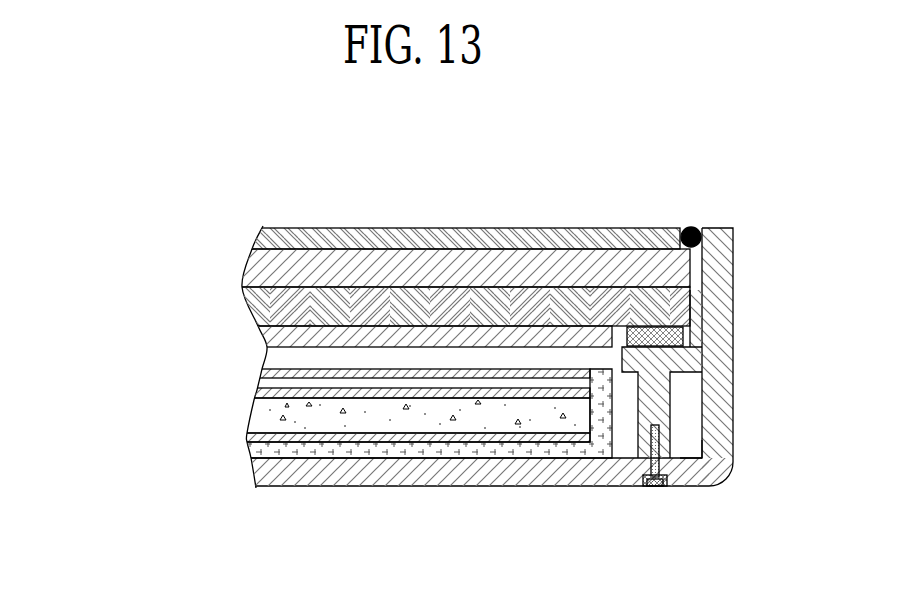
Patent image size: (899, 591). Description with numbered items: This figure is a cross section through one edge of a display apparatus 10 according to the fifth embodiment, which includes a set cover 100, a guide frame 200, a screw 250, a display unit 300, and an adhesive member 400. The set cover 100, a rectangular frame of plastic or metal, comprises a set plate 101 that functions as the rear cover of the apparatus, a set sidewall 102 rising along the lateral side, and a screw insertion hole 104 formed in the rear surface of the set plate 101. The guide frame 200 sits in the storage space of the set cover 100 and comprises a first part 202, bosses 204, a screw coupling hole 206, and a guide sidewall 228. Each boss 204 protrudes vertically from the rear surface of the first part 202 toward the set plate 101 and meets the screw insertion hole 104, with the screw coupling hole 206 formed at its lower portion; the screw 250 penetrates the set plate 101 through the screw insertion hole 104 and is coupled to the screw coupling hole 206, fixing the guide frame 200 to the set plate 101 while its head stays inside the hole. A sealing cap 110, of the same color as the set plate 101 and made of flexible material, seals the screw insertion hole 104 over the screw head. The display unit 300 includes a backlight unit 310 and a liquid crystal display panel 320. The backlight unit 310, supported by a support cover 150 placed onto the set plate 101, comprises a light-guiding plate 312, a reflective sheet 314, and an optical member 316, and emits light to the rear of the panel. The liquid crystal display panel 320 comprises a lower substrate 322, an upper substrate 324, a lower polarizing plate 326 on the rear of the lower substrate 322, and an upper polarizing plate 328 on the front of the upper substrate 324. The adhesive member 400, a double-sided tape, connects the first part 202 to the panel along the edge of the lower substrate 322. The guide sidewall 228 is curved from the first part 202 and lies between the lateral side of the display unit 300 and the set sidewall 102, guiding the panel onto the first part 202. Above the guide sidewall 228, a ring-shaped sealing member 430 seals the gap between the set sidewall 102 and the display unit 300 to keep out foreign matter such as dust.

The display apparatus 10 is at (442, 204).
The set cover 100 is at (741, 489).
The set plate 101 is at (258, 480).
The set sidewall 102 is at (726, 248).
The screw insertion hole 104 is at (668, 486).
The sealing cap 110 is at (648, 488).
The support cover 150 is at (252, 449).
The guide frame 200 is at (818, 312).
The first part 202 is at (682, 360).
The boss 204 is at (664, 388).
The screw coupling hole 206 is at (657, 426).
The guide sidewall 228 is at (697, 305).
The screw 250 is at (700, 453).
The display unit 300 is at (75, 413).
The backlight unit 310 is at (127, 382).
The light-guiding plate 312 is at (257, 420).
The reflective sheet 314 is at (250, 437).
The optical member 316 is at (267, 393).
The liquid crystal display panel 320 is at (147, 232).
The lower substrate 322 is at (255, 311).
The upper substrate 324 is at (257, 272).
The lower polarizing plate 326 is at (268, 343).
The upper polarizing plate 328 is at (265, 241).
The adhesive member 400 is at (652, 336).
The sealing member 430 is at (691, 226).